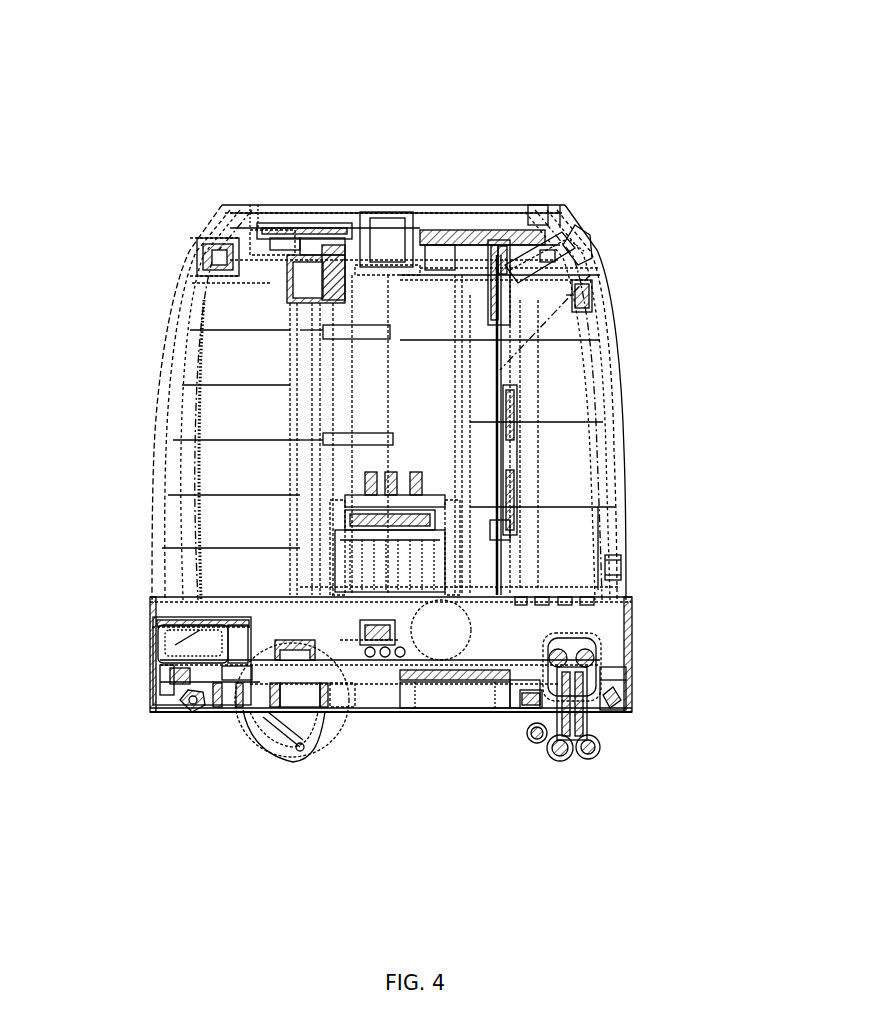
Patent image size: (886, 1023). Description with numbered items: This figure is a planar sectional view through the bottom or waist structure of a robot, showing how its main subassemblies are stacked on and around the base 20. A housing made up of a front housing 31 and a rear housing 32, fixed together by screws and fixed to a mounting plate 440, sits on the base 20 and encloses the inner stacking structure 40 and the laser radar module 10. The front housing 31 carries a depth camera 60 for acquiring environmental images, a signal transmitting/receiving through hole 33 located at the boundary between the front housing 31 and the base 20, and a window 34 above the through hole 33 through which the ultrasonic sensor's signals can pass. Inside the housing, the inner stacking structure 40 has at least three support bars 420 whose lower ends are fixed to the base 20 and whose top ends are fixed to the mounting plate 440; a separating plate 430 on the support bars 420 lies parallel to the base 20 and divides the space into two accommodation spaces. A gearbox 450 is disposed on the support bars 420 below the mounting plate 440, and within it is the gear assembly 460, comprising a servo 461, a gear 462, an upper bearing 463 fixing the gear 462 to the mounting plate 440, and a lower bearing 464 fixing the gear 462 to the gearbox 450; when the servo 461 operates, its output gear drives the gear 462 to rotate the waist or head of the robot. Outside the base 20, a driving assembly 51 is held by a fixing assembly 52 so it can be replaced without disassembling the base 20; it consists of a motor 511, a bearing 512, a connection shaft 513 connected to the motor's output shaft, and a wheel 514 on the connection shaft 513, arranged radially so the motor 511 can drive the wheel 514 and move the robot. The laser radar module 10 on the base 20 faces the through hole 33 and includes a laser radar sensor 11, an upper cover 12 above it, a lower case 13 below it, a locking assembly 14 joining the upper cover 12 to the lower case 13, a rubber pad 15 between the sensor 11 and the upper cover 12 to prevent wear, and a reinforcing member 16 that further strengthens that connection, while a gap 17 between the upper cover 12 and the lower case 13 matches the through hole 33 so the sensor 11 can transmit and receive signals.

The laser radar module 10 is at (35, 643).
The laser radar sensor 11 is at (157, 688).
The upper cover 12 is at (182, 712).
The lower case 13 is at (200, 706).
The locking assembly 14 is at (217, 685).
The rubber pad 15 is at (152, 660).
The reinforcing member 16 is at (237, 665).
The gap 17 is at (153, 656).
The base 20 is at (313, 722).
The front housing 31 is at (225, 417).
The rear housing 32 is at (568, 395).
The signal transmitting/receiving through hole 33 is at (157, 650).
The window 34 is at (150, 623).
The inner stacking structure 40 is at (803, 63).
The support bars 420 is at (577, 230).
The separating plate 430 is at (512, 204).
The mounting plate 440 is at (493, 204).
The gearbox 450 is at (462, 204).
The gear assembly 460 is at (392, 98).
The servo 461 is at (392, 122).
The gear 462 is at (337, 204).
The upper bearing 463 is at (420, 204).
The lower bearing 464 is at (397, 204).
The driving assembly 51 is at (720, 800).
The motor 511 is at (485, 708).
The bearing 512 is at (530, 743).
The connection shaft 513 is at (560, 743).
The wheel 514 is at (605, 712).
The fixing assembly 52 is at (440, 700).
The depth camera 60 is at (203, 250).